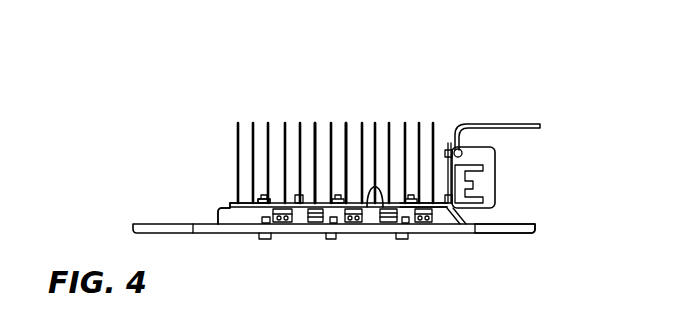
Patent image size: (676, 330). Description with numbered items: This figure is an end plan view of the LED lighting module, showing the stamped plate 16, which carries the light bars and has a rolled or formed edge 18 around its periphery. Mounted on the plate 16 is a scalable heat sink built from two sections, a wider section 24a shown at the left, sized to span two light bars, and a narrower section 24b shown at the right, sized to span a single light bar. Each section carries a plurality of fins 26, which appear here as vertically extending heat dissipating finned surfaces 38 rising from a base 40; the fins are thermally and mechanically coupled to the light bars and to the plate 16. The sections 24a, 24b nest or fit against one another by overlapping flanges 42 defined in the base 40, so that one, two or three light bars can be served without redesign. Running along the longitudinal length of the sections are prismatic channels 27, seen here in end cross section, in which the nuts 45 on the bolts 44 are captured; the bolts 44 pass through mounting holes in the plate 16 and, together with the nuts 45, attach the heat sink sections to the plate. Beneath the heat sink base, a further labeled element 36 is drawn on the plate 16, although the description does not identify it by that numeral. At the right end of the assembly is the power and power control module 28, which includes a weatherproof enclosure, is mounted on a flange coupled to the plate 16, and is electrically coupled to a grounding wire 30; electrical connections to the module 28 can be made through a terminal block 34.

The stamped plate 16 is at (505, 245).
The rolled or formed edge 18 is at (530, 229).
The heat sink section 24a is at (233, 203).
The heat sink section 24b is at (413, 203).
The fins 26 is at (346, 119).
The prismatic channels 27 is at (263, 200).
The module 28 is at (476, 160).
The grounding wire 30 is at (523, 122).
The terminal block 34 is at (474, 186).
The electronic component 36 is at (321, 240).
The heat dissipating finned surfaces 38 is at (376, 126).
The base 40 is at (438, 209).
The overlapping flanges 42 is at (372, 210).
The bolts 44 is at (267, 240).
The nuts 45 is at (263, 203).